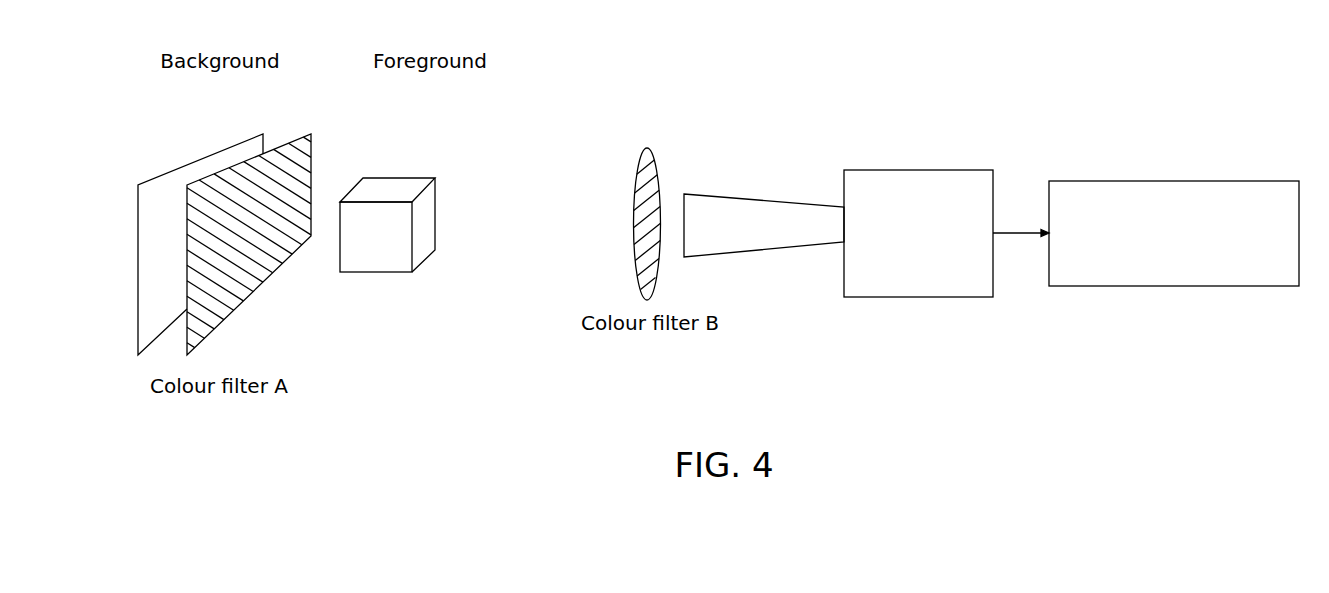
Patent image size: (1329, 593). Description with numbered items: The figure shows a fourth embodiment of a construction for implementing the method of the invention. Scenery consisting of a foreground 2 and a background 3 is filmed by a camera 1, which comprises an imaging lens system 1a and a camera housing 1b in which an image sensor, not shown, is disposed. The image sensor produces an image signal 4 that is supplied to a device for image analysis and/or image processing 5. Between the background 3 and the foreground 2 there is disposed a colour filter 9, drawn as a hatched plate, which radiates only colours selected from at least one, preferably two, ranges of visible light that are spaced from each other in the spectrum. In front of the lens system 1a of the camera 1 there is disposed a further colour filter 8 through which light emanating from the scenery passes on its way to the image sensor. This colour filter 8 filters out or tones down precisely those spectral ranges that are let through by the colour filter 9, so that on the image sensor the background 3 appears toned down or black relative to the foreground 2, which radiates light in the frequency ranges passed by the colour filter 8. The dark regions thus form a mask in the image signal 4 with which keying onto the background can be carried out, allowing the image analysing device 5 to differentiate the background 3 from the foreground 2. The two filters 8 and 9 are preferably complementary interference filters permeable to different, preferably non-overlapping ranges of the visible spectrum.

The camera 1 is at (838, 211).
The imaging lens system 1a is at (772, 201).
The camera housing 1b is at (883, 170).
The foreground 2 is at (399, 178).
The background 3 is at (223, 151).
The image signal 4 is at (1020, 232).
The device for image analysis and/or image processing 5 is at (1175, 181).
The colour filter 8 is at (648, 148).
The colour filter 9 is at (305, 135).